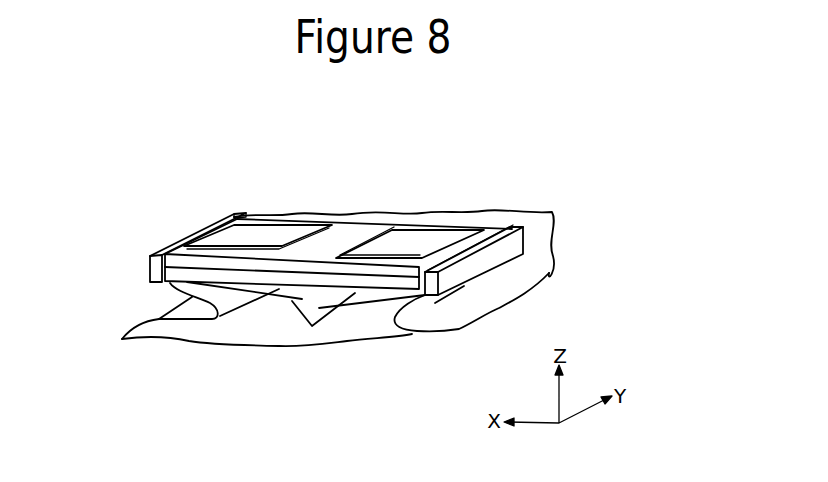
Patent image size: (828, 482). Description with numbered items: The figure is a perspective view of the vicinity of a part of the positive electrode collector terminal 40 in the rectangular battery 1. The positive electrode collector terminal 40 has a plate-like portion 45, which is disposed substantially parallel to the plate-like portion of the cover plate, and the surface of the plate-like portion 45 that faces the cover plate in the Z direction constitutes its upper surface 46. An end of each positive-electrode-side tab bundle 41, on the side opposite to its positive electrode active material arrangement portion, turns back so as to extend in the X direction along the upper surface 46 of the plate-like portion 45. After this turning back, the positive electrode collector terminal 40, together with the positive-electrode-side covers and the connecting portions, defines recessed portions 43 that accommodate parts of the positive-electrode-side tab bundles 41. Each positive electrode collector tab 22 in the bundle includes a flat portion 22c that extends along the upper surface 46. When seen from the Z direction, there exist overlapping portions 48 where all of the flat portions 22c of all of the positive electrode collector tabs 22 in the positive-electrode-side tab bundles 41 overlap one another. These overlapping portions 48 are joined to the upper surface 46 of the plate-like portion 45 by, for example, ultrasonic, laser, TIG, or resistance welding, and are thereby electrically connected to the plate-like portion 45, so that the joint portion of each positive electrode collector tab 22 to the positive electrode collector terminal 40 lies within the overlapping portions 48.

The rectangular battery 1 is at (408, 158).
The positive electrode collector tab 22 is at (215, 233).
The flat portion 22c is at (260, 228).
The upper surface 46 is at (288, 224).
The plate-like portion 45 is at (333, 225).
The overlapping portions 48 is at (427, 230).
The recessed portions 43 is at (170, 288).
The positive-electrode-side tab bundle 41 is at (253, 295).
The positive electrode collector terminal 40 is at (314, 254).